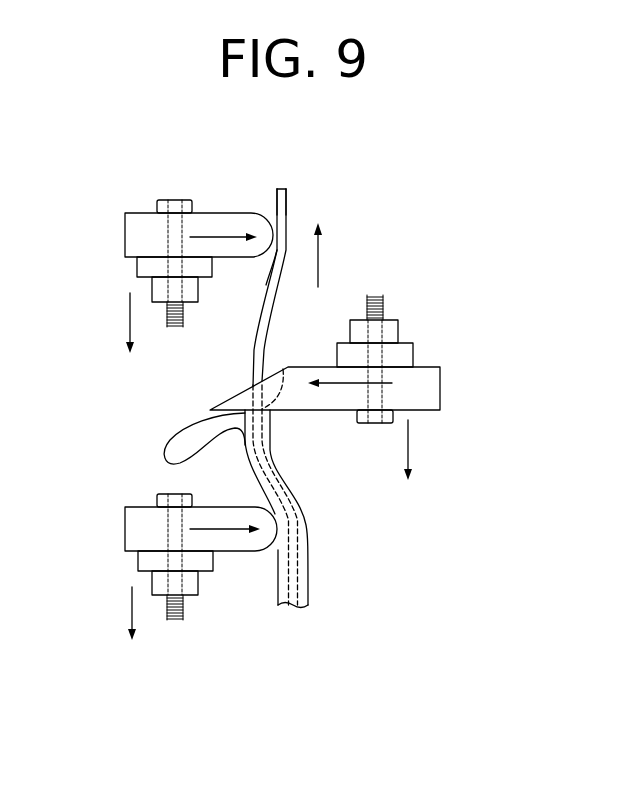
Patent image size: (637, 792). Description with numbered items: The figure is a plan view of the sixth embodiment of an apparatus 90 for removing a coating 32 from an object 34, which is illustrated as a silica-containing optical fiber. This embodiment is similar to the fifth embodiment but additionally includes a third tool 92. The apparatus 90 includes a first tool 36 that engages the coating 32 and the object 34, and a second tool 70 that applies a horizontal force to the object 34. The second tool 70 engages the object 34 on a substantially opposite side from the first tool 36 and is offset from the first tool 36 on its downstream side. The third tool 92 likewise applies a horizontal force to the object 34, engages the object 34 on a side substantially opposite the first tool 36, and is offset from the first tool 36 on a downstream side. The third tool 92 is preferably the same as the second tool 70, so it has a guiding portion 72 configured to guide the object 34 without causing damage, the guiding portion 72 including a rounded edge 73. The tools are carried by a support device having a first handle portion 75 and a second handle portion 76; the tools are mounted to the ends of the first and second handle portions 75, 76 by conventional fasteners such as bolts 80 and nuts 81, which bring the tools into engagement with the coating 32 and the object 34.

The coating 32 is at (308, 563).
The object 34 is at (267, 331).
The first tool 36 is at (430, 383).
The second tool 70 is at (125, 533).
The guiding portion 72 is at (262, 199).
The rounded edge 73 is at (272, 251).
The first handle portion 75 is at (403, 350).
The second handle portion 76 is at (142, 268).
The bolt 80 is at (176, 208).
The nut 81 is at (193, 290).
The apparatus 90 is at (463, 210).
The third tool 92 is at (125, 241).